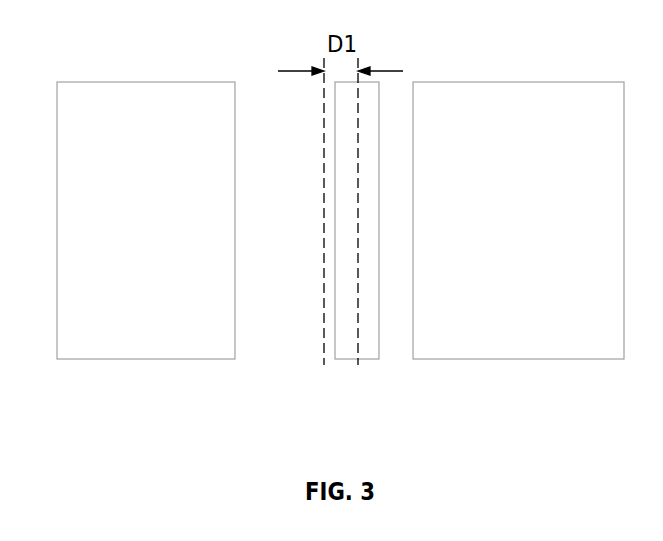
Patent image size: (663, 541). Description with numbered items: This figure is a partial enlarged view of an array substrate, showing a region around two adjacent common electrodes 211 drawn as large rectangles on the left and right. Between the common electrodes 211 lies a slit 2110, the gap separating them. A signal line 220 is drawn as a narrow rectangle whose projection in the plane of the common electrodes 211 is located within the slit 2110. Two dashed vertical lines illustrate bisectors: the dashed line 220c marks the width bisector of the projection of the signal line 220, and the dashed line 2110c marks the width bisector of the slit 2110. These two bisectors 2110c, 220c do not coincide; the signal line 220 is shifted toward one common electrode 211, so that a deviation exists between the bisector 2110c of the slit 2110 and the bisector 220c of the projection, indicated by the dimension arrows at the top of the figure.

The common electrode 211 is at (96, 100).
The slit 2110 is at (257, 108).
The signal line 220 is at (370, 332).
The width bisector of the slit 2110c is at (324, 365).
The width bisector of the projection 220c is at (358, 365).